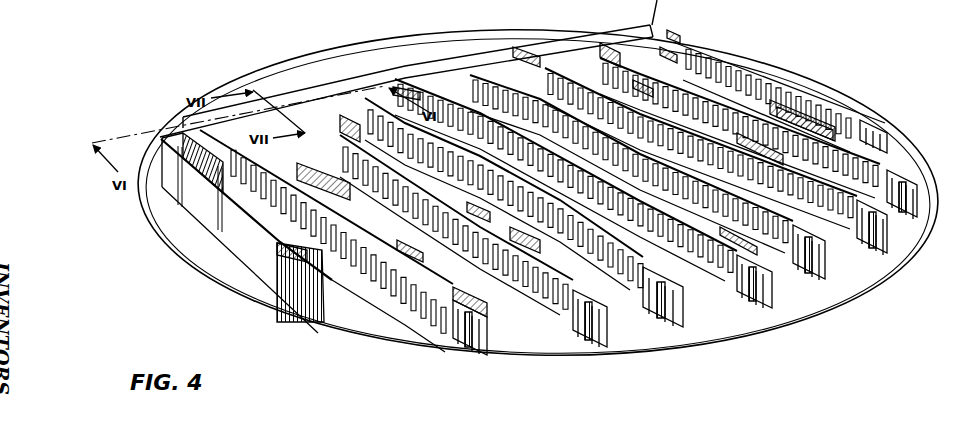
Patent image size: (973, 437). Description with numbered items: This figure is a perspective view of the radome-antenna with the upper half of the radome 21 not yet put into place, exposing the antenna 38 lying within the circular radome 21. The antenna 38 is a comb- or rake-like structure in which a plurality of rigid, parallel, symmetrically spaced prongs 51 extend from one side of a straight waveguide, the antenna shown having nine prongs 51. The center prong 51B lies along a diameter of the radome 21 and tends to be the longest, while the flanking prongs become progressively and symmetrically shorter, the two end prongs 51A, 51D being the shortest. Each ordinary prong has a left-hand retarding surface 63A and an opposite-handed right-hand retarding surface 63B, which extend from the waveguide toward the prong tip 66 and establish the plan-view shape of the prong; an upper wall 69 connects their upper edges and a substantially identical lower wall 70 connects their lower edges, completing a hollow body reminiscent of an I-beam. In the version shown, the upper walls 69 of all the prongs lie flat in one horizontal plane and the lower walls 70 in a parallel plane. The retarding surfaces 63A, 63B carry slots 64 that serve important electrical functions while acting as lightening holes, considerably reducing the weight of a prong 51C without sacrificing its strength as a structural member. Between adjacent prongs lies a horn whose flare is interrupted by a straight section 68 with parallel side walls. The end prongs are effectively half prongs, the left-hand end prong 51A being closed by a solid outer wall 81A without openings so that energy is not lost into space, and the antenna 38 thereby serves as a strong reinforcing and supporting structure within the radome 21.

The radome 21 is at (150, 129).
The antenna 38 is at (761, 60).
The prongs 51 is at (657, 322).
The left-hand end prong 51A is at (238, 252).
The center prong 51B is at (773, 283).
The prong 51C is at (826, 258).
The right-hand end prong 51D is at (843, 100).
The left-hand retarding surface 63A is at (431, 320).
The right-hand retarding surface 63B is at (489, 305).
The slots 64 is at (393, 276).
The prong tip 66 is at (611, 324).
The straight section 68 is at (318, 252).
The upper wall 69 is at (705, 233).
The lower wall 70 is at (727, 298).
The solid outer wall 81A is at (230, 216).